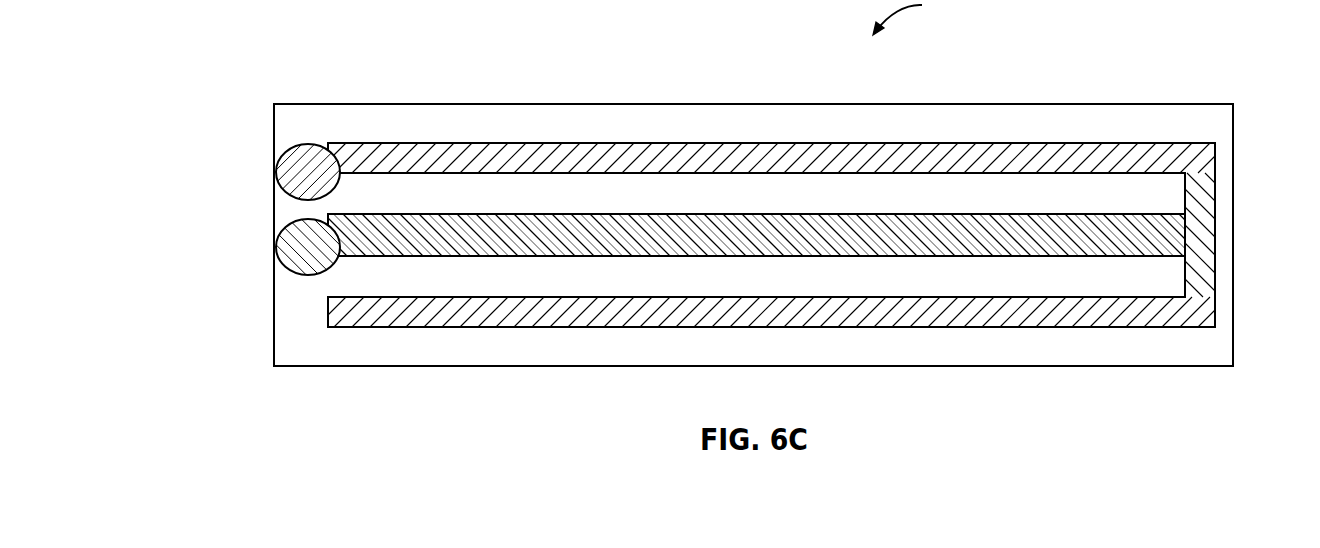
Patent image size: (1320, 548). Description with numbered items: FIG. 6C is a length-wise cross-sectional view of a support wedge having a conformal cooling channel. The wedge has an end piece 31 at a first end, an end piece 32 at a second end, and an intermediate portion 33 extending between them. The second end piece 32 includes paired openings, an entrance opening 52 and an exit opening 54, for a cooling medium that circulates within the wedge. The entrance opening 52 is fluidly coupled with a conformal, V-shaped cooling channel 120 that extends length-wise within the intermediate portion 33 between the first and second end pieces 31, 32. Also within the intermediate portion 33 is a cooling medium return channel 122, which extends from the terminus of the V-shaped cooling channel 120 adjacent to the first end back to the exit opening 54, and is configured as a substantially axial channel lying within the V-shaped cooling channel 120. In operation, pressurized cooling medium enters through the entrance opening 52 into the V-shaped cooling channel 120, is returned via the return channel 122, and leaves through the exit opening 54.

The end piece 31 is at (1233, 183).
The end piece 32 is at (273, 336).
The intermediate portion 33 is at (916, 17).
The entrance opening 52 is at (285, 178).
The exit opening 54 is at (276, 259).
The V-shaped cooling channel 120 is at (442, 160).
The cooling medium return channel 122 is at (477, 237).